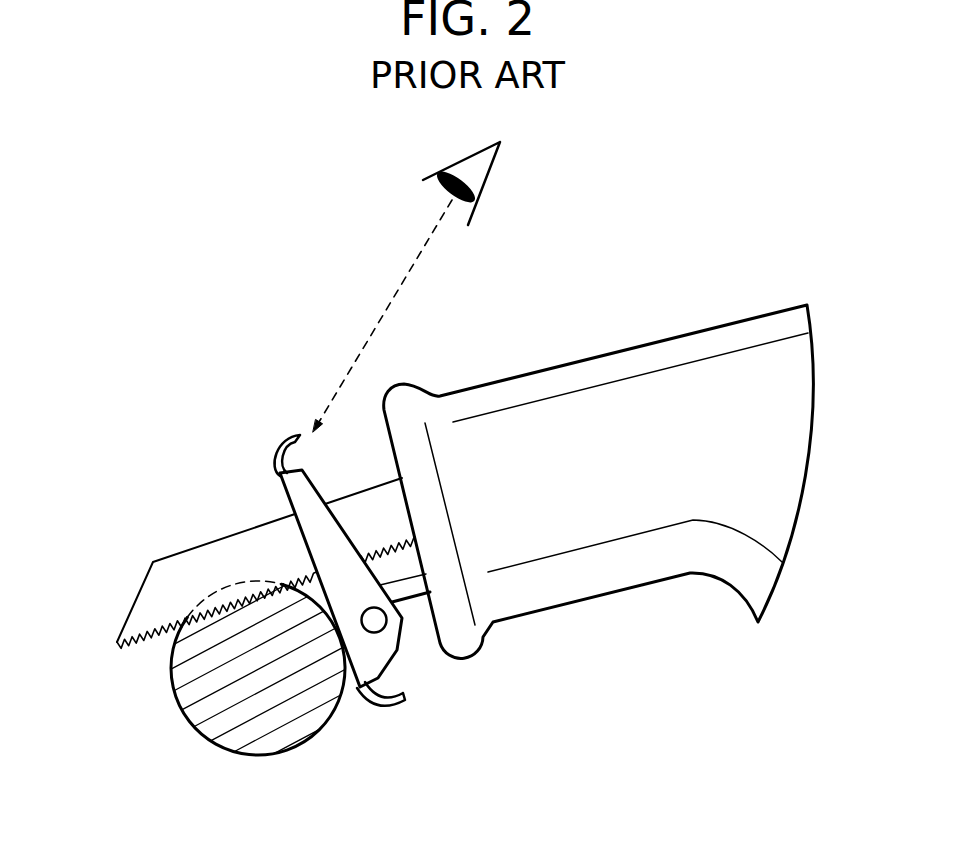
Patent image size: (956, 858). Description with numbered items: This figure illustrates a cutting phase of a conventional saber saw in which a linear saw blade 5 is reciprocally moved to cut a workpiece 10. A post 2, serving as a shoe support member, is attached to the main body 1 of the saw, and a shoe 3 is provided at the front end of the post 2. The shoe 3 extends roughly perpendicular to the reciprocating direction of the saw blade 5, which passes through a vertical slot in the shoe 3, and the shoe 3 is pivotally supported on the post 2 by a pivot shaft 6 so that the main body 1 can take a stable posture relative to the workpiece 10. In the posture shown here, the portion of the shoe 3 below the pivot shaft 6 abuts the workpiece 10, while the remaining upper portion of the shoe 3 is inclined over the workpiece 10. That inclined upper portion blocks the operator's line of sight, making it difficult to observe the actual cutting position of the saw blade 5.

The main body 1 is at (738, 337).
The post 2 is at (417, 592).
The shoe 3 is at (288, 491).
The saw blade 5 is at (185, 573).
The pivot shaft 6 is at (378, 621).
The workpiece 10 is at (280, 735).